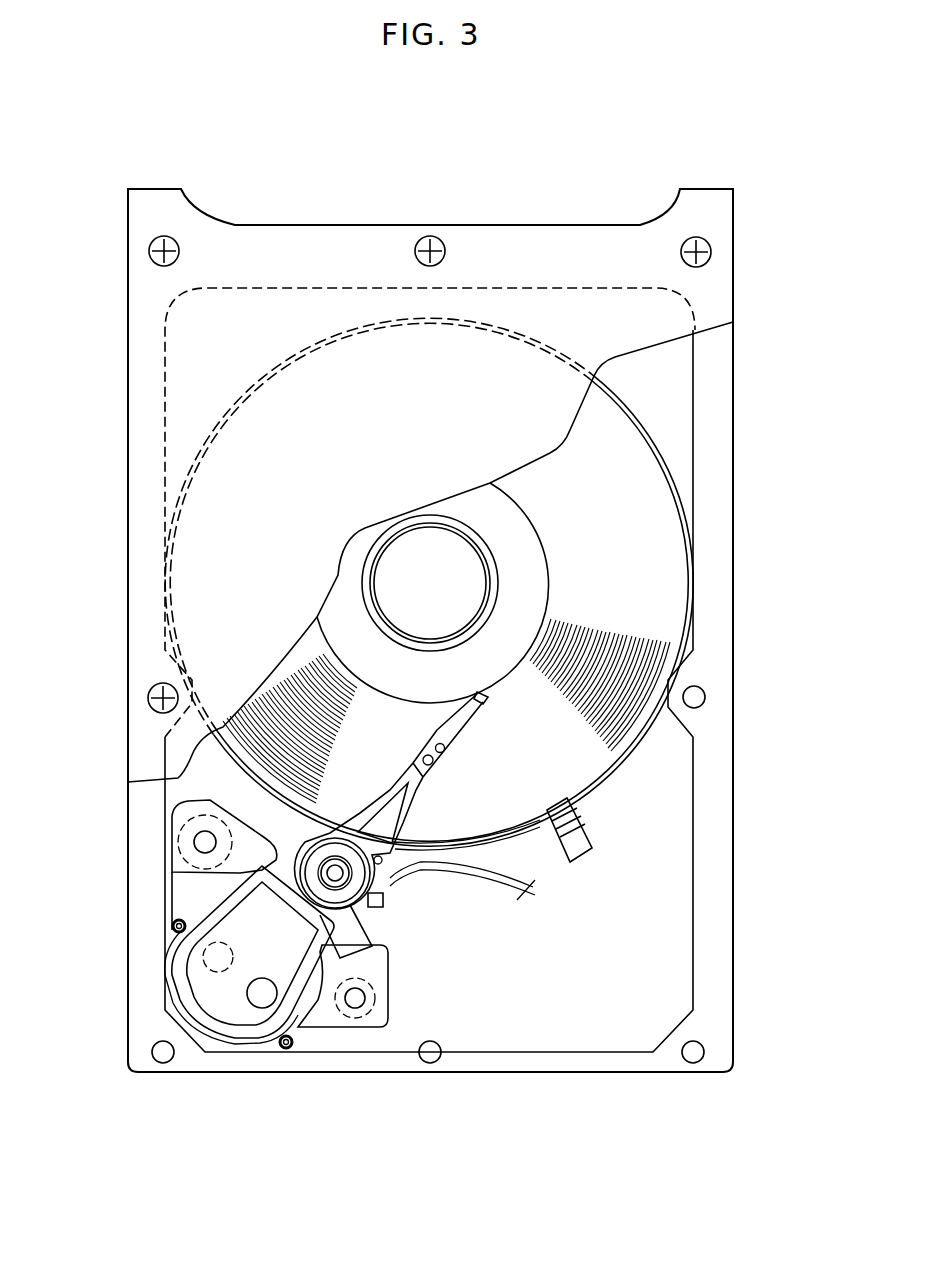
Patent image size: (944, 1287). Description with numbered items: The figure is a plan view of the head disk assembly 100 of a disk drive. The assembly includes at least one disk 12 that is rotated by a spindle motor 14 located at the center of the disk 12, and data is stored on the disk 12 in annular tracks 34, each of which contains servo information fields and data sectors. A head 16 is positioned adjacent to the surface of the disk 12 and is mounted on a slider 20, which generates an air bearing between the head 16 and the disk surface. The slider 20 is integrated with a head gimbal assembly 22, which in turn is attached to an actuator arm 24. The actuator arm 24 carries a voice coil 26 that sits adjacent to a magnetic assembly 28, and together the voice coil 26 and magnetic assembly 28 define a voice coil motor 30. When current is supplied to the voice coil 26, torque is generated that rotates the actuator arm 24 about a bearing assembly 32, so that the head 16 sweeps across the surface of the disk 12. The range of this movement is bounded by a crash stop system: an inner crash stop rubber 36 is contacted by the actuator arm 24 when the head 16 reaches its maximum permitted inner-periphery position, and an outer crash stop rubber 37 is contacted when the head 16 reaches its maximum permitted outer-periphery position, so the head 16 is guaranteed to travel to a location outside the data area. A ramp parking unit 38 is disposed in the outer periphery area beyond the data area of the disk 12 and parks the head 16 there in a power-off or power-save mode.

The head disk assembly 100 is at (566, 176).
The disk 12 is at (650, 528).
The spindle motor 14 is at (408, 562).
The head 16 is at (466, 727).
The slider 20 is at (492, 696).
The head gimbal assembly 22 is at (470, 738).
The actuator arm 24 is at (258, 892).
The voice coil 26 is at (183, 955).
The magnetic assembly 28 is at (207, 902).
The voice coil motor 30 is at (308, 1013).
The bearing assembly 32 is at (347, 887).
The annular tracks 34 is at (303, 690).
The inner crash stop rubber 36 is at (287, 1049).
The outer crash stop rubber 37 is at (172, 926).
The ramp parking unit 38 is at (583, 857).